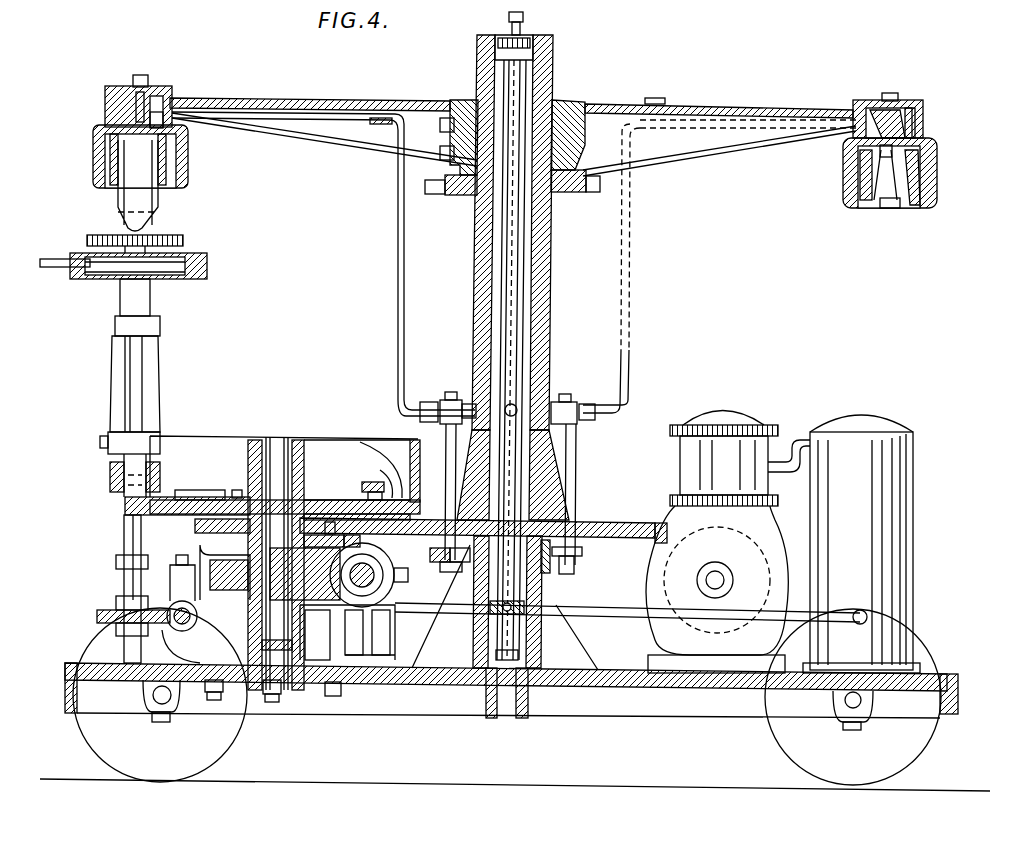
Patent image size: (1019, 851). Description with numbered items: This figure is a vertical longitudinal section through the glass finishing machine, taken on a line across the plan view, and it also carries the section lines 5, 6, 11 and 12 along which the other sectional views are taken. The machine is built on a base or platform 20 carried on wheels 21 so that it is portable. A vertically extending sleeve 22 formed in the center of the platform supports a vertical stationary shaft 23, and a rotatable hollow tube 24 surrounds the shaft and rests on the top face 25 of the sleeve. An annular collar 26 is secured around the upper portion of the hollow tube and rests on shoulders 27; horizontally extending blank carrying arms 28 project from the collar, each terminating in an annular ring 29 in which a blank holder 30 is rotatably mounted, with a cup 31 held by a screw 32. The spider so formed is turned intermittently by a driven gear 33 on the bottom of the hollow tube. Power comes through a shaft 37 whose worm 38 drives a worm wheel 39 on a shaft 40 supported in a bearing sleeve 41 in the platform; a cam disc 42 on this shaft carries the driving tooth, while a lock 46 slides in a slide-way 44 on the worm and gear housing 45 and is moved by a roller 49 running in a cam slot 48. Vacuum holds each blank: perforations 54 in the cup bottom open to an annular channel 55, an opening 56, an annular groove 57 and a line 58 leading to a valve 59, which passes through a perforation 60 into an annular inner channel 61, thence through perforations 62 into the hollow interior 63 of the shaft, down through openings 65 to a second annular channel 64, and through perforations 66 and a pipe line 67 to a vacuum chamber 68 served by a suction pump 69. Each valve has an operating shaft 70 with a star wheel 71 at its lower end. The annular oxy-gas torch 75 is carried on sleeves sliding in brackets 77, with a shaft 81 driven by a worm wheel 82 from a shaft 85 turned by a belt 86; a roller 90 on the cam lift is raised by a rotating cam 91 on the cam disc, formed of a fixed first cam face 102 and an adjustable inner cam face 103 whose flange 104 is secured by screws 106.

The section line 5— 5 is at (590, 583).
The section line 6— 6 is at (95, 572).
The section line 11— 11 is at (98, 462).
The section line 12— 12 is at (470, 546).
The base or platform 20 is at (955, 692).
The wheels 21 is at (100, 742).
The vertically extending sleeve 22 is at (542, 582).
The vertical stationary shaft 23 is at (522, 312).
The rotatable hollow tube 24 is at (549, 262).
The top face of the sleeve 25 is at (573, 522).
The annular collar 26 is at (565, 106).
The shoulders 27 is at (560, 205).
The blank carrying arms 28 is at (705, 126).
The annular ring 29 is at (915, 126).
The blank holder 30 is at (937, 152).
The cup 31 is at (915, 205).
The screw 32 is at (880, 205).
The driven gear 33 is at (632, 521).
The shaft 37 is at (395, 592).
The worm 38 is at (392, 610).
The worm wheel 39 is at (196, 560).
The shaft 40 is at (266, 450).
The bearing sleeve 41 is at (300, 690).
The cam disc 42 is at (125, 506).
The slide-way 44 is at (335, 537).
The worm and gear housing 45 is at (285, 545).
The lock 46 is at (345, 514).
The cam slot 48 is at (222, 559).
The roller 49 is at (352, 535).
The perforations 54 is at (152, 145).
The annular channel 55 is at (180, 160).
The opening 56 is at (172, 127).
The annular groove 57 is at (160, 88).
The line 58 is at (300, 108).
The valve 59 is at (446, 406).
The perforation 60 is at (470, 404).
The annular inner channel 61 is at (500, 406).
The perforations 62 is at (553, 402).
The hollow interior 63 is at (578, 454).
The second annular channel 64 is at (492, 614).
The openings 65 is at (502, 612).
The perforations 66 is at (535, 616).
The pipe line 67 is at (626, 624).
The vacuum chamber 68 is at (913, 524).
The suction pump 69 is at (745, 430).
The operating shaft 70 is at (446, 485).
The star wheel 71 is at (448, 566).
The annular oxy-gas torch 75 is at (185, 258).
The brackets 77 is at (160, 375).
The shaft 81 is at (124, 586).
The worm wheel 82 is at (104, 623).
The shaft 85 is at (190, 702).
The belt 86 is at (232, 700).
The roller 90 is at (110, 481).
The rotating cam 91 is at (204, 437).
The first cam face 102 is at (402, 455).
The inner cam face 103 is at (362, 440).
The flange 104 is at (390, 460).
The screws 106 is at (372, 482).